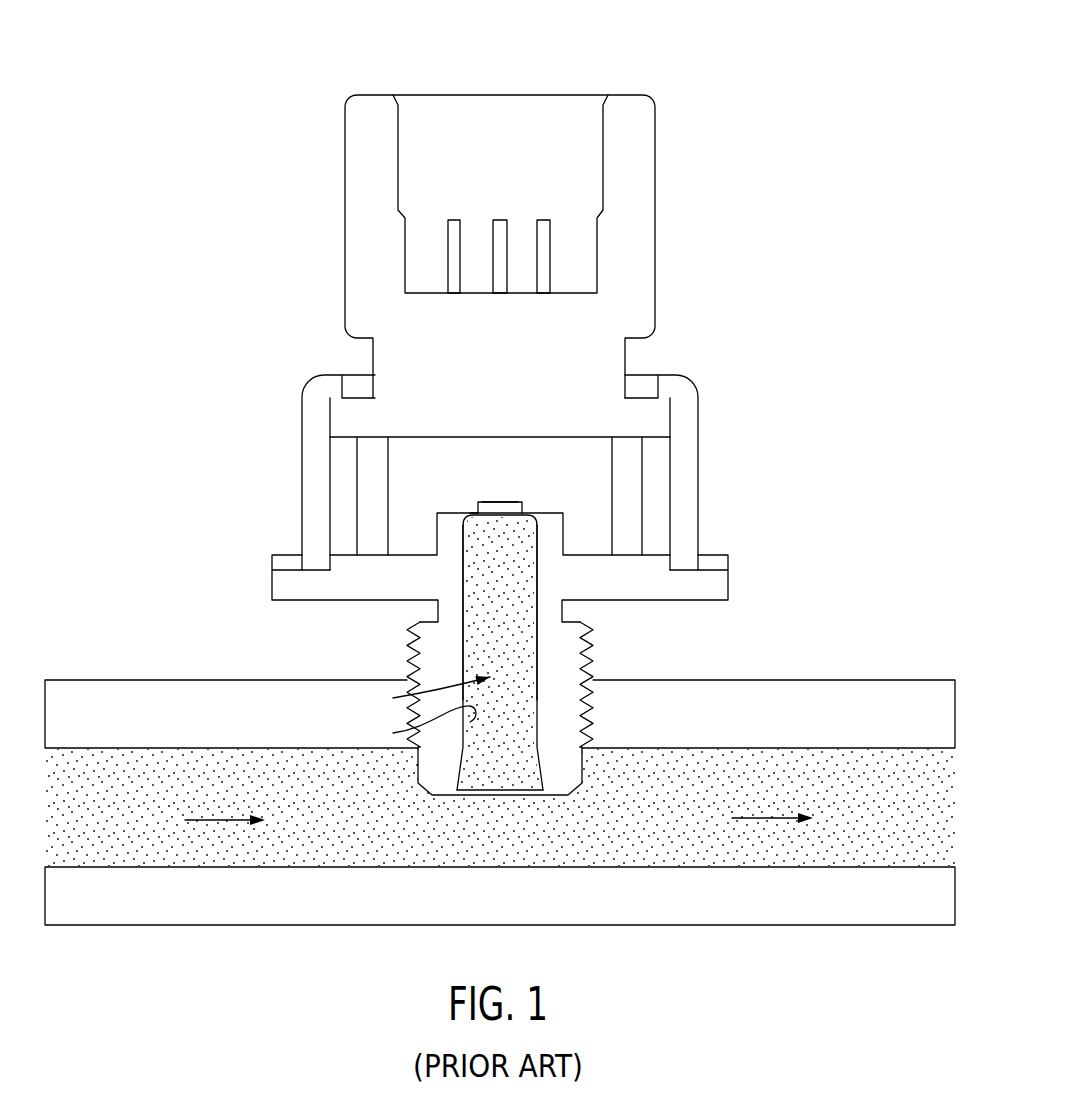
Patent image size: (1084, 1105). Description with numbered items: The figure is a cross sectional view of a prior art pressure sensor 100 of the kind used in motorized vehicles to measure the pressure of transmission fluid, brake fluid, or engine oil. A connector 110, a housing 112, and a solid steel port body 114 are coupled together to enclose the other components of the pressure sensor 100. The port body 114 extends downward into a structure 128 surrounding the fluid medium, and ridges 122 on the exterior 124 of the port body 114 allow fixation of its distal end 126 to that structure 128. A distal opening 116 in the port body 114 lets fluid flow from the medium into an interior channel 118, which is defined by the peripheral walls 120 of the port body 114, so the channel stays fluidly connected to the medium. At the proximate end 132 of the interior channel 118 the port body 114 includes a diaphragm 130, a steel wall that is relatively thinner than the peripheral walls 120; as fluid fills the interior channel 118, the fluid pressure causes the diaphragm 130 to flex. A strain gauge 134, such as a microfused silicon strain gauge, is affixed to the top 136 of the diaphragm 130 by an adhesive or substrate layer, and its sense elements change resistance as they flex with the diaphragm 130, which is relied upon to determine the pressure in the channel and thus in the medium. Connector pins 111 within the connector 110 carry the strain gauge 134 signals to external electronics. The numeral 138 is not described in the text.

The pressure sensor 100 is at (553, 488).
The connector 110 is at (353, 195).
The connector pins 111 is at (545, 218).
The housing 112 is at (690, 487).
The solid steel port body 114 is at (297, 598).
The distal opening 116 is at (500, 785).
The interior channel 118 is at (425, 694).
The peripheral walls 120 is at (418, 727).
The ridges 122 is at (592, 655).
The exterior 124 is at (580, 773).
The distal end 126 is at (573, 795).
The structure 128 is at (837, 750).
The diaphragm 130 is at (474, 519).
The proximate end 132 is at (543, 514).
The strain gauge 134 is at (523, 508).
The top of the diaphragm 136 is at (477, 512).
The sensing element 138 is at (495, 502).